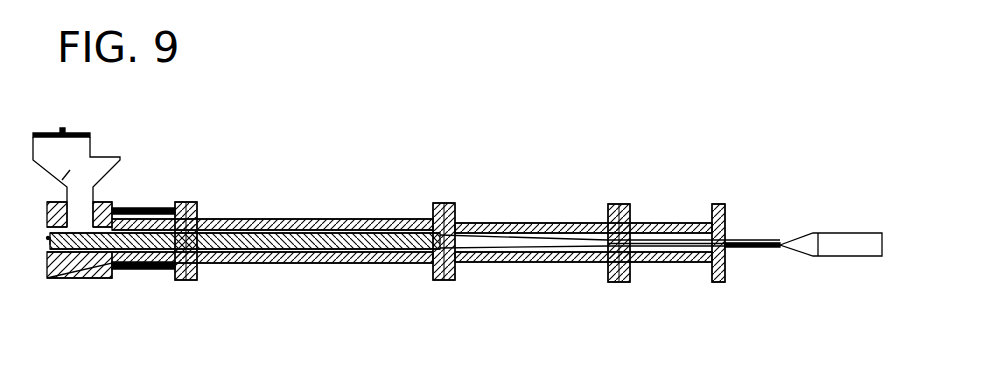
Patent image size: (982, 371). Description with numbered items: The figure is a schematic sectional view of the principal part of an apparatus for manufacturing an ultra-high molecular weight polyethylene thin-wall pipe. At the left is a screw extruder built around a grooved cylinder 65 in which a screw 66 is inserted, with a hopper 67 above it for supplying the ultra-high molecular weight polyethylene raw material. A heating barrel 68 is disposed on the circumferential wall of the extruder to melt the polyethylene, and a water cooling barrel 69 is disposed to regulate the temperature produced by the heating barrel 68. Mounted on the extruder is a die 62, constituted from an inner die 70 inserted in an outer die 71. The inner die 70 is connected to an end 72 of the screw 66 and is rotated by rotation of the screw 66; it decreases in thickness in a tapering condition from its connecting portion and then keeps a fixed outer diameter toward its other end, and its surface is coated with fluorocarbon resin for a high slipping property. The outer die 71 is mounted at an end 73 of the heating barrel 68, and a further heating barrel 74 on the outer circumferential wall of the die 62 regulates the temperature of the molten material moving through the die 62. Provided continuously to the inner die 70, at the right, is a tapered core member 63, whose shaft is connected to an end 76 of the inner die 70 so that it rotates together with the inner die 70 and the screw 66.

The die 62 is at (582, 270).
The tapered core member 63 is at (825, 240).
The grooved cylinder 65 is at (100, 278).
The screw 66 is at (322, 237).
The hopper 67 is at (102, 152).
The heating barrel 68 is at (252, 220).
The water cooling barrel 69 is at (132, 210).
The inner die 70 is at (553, 228).
The outer die 71 is at (515, 228).
The end of the screw 72 is at (460, 227).
The end of the heating barrel 73 is at (437, 203).
The heating barrel 74 is at (590, 228).
The end of the inner die 76 is at (728, 247).